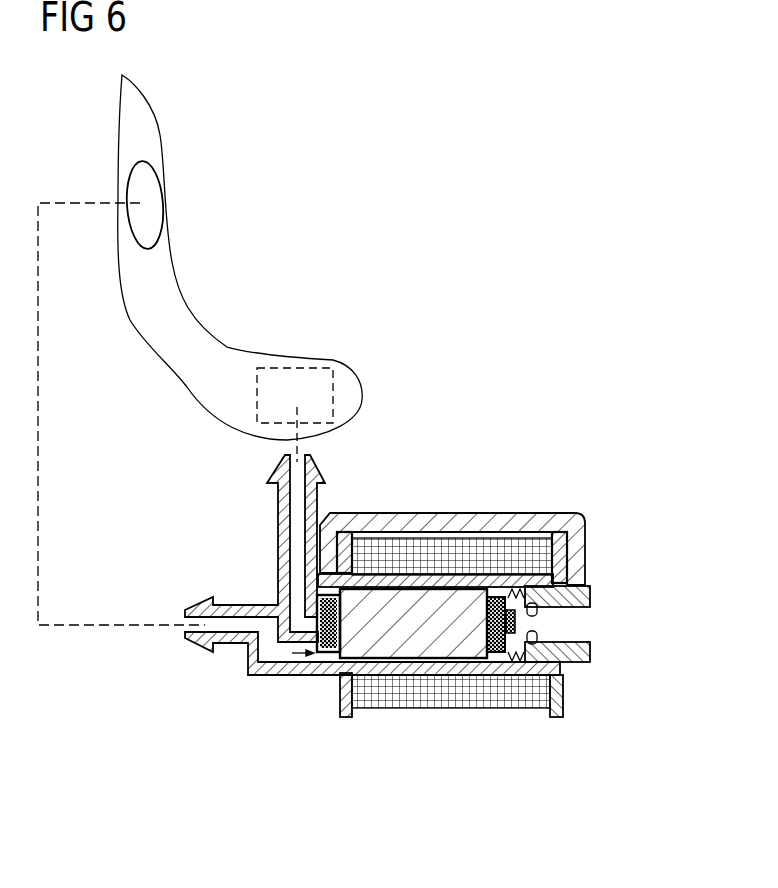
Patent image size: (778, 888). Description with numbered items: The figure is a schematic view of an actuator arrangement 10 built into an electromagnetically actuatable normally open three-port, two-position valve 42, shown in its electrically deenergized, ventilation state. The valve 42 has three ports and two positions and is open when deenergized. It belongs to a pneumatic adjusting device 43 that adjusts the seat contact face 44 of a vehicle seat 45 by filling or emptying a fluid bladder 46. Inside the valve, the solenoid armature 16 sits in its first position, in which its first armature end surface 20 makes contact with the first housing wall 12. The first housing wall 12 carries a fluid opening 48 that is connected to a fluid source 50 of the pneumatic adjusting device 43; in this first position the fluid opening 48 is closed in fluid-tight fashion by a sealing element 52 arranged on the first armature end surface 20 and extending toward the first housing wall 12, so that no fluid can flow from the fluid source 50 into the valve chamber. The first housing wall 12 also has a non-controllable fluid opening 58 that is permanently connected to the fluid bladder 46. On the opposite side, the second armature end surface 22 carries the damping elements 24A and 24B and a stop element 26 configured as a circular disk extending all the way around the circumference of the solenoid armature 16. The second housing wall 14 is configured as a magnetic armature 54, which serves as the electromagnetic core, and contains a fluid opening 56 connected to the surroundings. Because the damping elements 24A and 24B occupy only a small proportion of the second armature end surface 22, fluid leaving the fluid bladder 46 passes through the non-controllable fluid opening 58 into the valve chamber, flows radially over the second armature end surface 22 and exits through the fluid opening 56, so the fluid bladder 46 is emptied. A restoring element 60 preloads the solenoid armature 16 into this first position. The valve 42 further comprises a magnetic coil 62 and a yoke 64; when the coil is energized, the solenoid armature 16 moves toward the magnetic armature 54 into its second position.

The actuator arrangement 10 is at (335, 700).
The first housing wall 12 is at (296, 594).
The second housing wall 14 is at (610, 588).
The solenoid armature 16 is at (435, 645).
The first armature end surface 20 is at (293, 653).
The second armature end surface 22 is at (523, 593).
The damping element 24A is at (545, 585).
The damping element 24B is at (540, 647).
The stop element 26 is at (515, 623).
The 3/2 NO valve 42 is at (560, 492).
The pneumatic adjusting device 43 is at (522, 270).
The seat contact face 44 is at (178, 272).
The vehicle seat 45 is at (290, 118).
The fluid bladder 46 is at (146, 160).
The fluid opening 48 is at (262, 663).
The fluid source 50 is at (296, 368).
The sealing element 52 is at (357, 670).
The magnetic armature 54 is at (578, 652).
The fluid opening 56 is at (528, 628).
The non-controllable fluid opening 58 is at (312, 620).
The restoring element 60 is at (510, 652).
The magnetic coil 62 is at (463, 550).
The yoke 64 is at (388, 523).